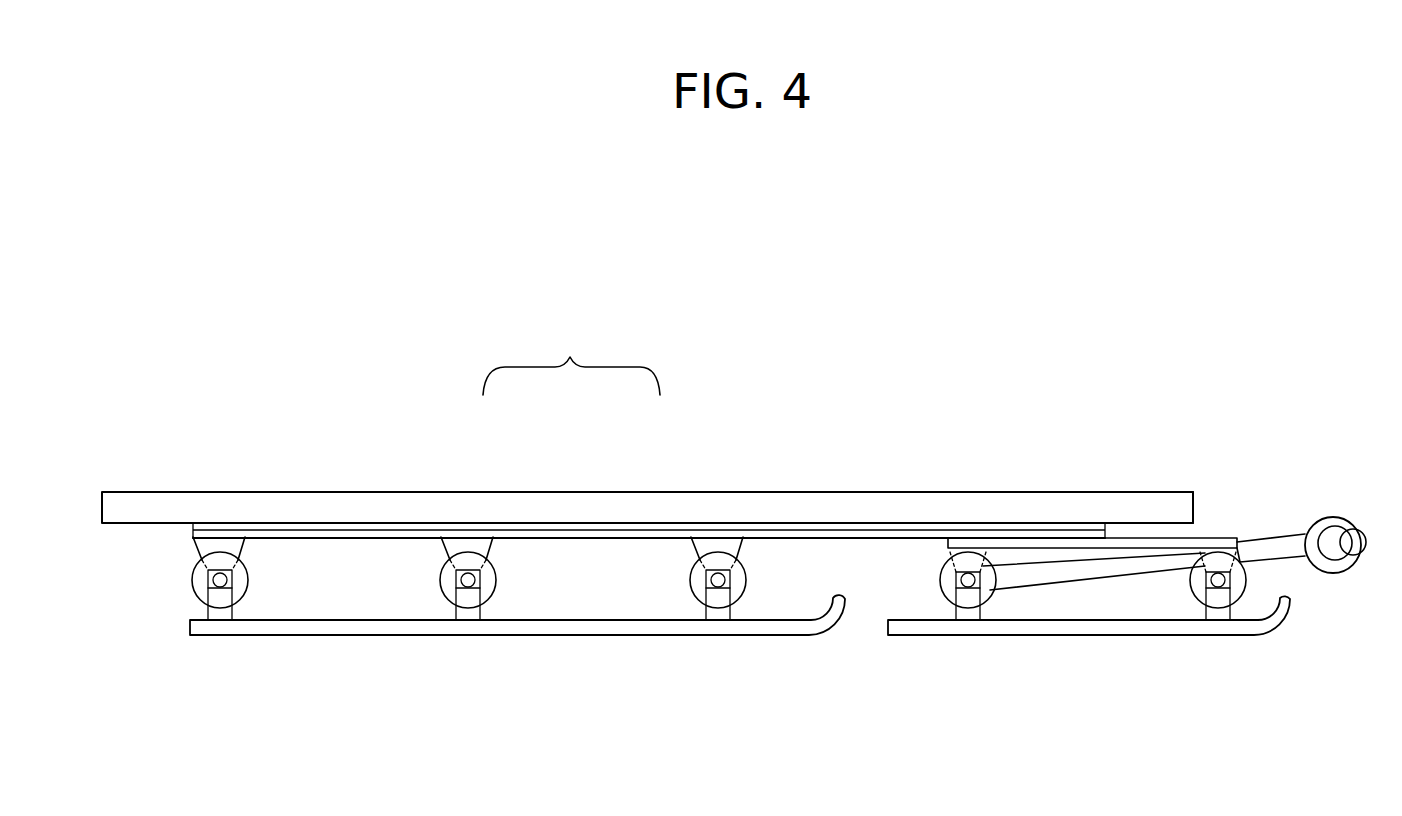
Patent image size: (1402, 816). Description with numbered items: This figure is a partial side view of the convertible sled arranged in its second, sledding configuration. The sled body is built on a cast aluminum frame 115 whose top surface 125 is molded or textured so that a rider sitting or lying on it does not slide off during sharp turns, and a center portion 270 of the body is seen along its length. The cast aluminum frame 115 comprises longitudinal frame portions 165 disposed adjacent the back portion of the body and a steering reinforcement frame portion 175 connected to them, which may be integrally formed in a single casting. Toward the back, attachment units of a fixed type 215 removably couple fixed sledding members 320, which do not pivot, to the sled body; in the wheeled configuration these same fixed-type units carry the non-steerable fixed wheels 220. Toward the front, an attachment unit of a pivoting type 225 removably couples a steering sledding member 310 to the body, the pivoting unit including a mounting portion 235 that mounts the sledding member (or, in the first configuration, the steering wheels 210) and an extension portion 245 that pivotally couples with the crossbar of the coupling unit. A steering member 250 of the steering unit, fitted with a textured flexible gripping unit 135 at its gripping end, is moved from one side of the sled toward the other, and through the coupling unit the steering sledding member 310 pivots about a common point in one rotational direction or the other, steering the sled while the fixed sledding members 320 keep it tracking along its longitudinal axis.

The cast aluminum frame 115 is at (570, 352).
The top surface 125 is at (146, 500).
The gripping unit 135 is at (1350, 533).
The longitudinal frame portions 165 is at (357, 528).
The steering reinforcement frame portion 175 is at (866, 530).
The steering wheels 210 is at (958, 600).
The attachment units of a fixed type 215 is at (245, 543).
The fixed wheels 220 is at (235, 605).
The attachment units of a pivoting type 225 is at (1161, 654).
The mounting portion 235 is at (980, 565).
The extension portion 245 is at (1040, 548).
The steering member 250 is at (1273, 557).
The center portion 270 is at (930, 492).
The steering sledding members 310 is at (906, 637).
The fixed sledding members 320 is at (375, 633).